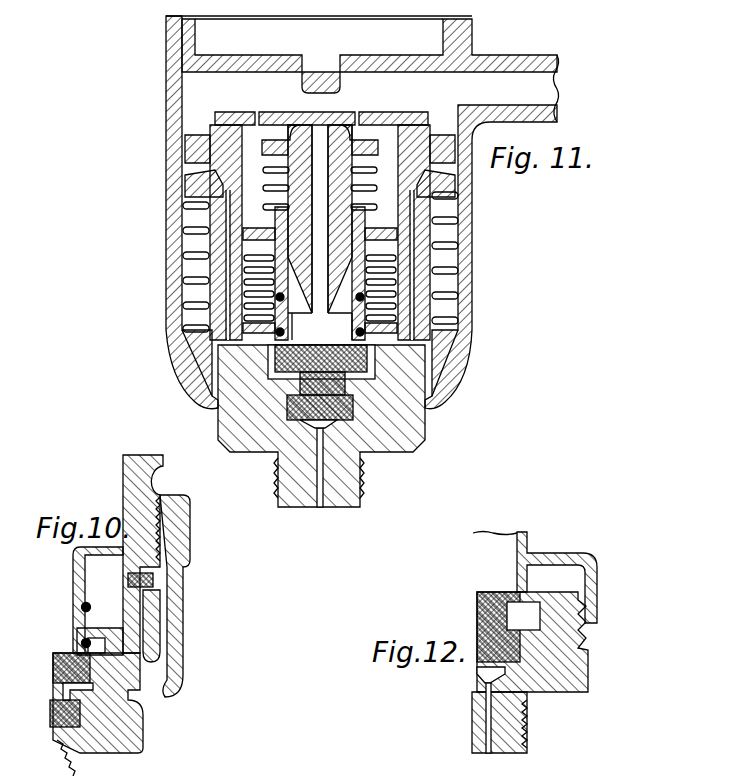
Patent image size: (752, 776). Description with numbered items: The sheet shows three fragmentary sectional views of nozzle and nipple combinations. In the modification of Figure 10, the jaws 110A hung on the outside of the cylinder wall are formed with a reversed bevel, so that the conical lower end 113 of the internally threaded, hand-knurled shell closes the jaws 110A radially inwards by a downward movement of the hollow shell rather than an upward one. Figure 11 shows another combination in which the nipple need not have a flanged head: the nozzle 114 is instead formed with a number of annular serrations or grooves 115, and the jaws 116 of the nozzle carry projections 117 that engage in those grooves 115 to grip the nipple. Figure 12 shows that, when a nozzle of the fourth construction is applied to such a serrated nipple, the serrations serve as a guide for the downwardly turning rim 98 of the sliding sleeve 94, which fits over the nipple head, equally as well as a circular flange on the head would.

In FIG. 11, the nozzle 114 is at (425, 411).
In FIG. 11, the serrations or grooves 115 is at (227, 357).
In FIG. 11, the jaws 116 is at (425, 284).
In FIG. 11, the projections 117 is at (427, 365).
In FIG. 10, the jaws 110A is at (153, 620).
In FIG. 10, the conical lower end 113 is at (172, 672).
In FIG. 12, the sliding sleeve 94 is at (528, 550).
In FIG. 12, the rim 98 is at (597, 602).